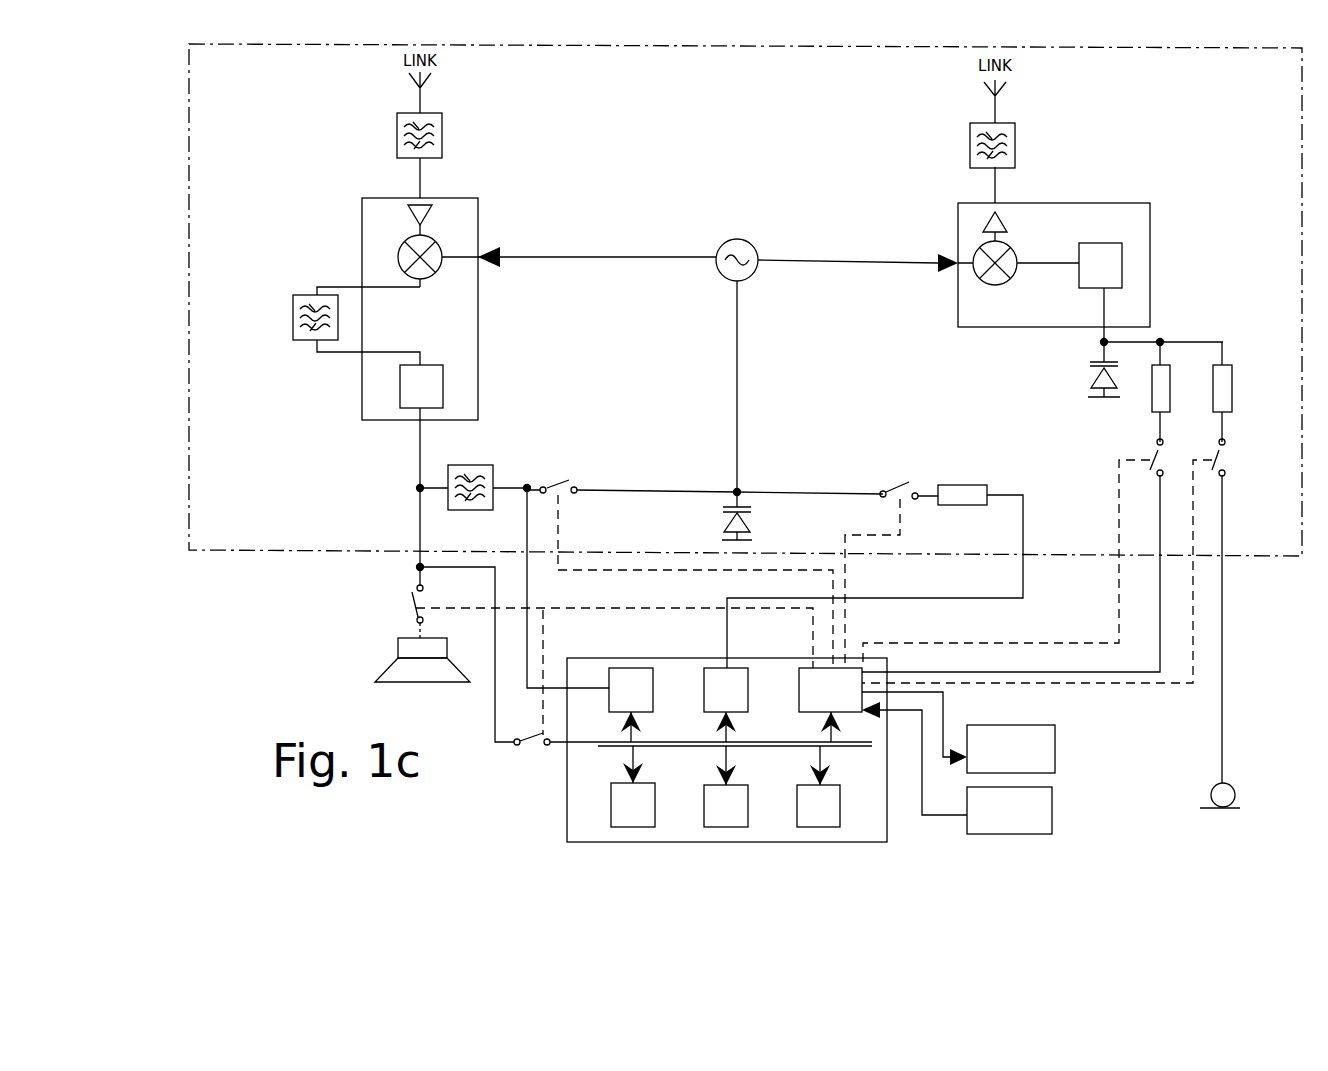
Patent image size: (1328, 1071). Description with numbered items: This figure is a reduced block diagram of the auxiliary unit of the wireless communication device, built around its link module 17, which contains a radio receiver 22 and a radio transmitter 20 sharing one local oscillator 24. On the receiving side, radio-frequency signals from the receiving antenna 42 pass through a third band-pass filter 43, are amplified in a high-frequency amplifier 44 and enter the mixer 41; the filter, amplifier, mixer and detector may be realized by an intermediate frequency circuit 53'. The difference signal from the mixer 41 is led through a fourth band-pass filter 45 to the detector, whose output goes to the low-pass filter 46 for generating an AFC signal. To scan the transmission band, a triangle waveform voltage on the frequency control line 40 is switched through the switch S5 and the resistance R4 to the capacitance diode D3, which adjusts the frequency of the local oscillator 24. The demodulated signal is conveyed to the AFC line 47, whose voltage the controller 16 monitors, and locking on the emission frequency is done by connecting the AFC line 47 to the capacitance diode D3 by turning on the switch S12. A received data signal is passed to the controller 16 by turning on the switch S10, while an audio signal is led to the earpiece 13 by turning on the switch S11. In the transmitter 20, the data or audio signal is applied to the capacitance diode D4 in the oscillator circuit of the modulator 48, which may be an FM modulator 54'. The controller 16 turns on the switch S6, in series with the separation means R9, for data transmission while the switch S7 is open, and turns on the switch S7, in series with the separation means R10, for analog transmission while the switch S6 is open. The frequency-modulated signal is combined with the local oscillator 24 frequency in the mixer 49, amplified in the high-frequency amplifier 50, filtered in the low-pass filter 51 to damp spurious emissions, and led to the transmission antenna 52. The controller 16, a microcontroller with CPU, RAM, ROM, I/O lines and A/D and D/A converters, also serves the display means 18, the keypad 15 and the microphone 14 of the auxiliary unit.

The link module 17 is at (208, 548).
The radio receiver 22 is at (548, 186).
The radio transmitter 20 is at (815, 186).
The receiving antenna 42 is at (415, 100).
The third band-pass filter 43 is at (394, 140).
The high-frequency amplifier 44 is at (431, 212).
The intermediate frequency circuit 53' is at (378, 309).
The mixer 41 is at (398, 257).
The fourth band-pass filter 45 is at (290, 320).
The low-pass filter 46 is at (493, 467).
The frequency control line 40 is at (396, 405).
The switch S12 is at (680, 560).
The AFC line 47 is at (658, 490).
The local oscillator 24 is at (725, 240).
The capacitance diode D3 is at (758, 516).
The switch S5 is at (891, 564).
The resistance R4 is at (962, 482).
The transmission antenna 52 is at (990, 104).
The low-pass filter 51 is at (967, 150).
The FM modulator 54' is at (1054, 217).
The high-frequency amplifier 50 is at (983, 228).
The mixer 49 is at (980, 283).
The modulator 48 is at (1122, 283).
The capacitance diode D4 is at (1085, 369).
The separation means R9 is at (1168, 378).
The separation means R10 is at (1252, 392).
The switch S6 is at (1012, 551).
The switch S7 is at (1067, 611).
The microphone 14 is at (1236, 798).
The switch S11 is at (579, 651).
The switch S10 is at (552, 757).
The earpiece 13 is at (398, 646).
The controller 16 is at (568, 814).
The display means 18 is at (1058, 750).
The keypad 15 is at (1055, 815).